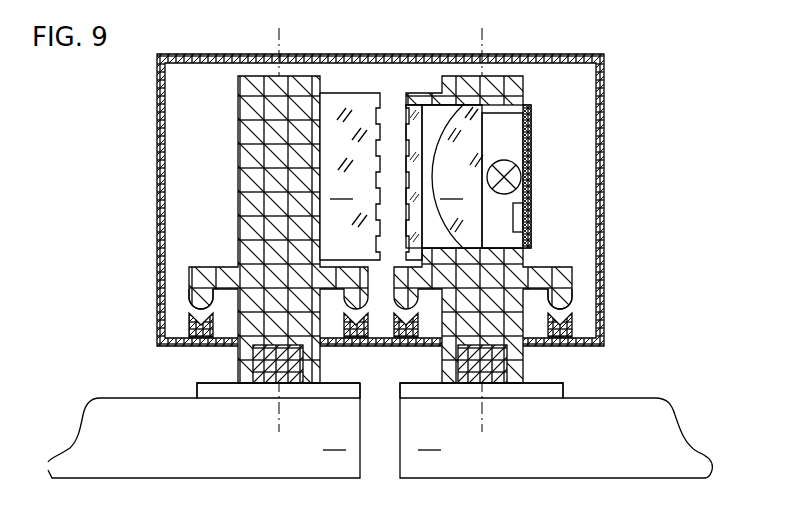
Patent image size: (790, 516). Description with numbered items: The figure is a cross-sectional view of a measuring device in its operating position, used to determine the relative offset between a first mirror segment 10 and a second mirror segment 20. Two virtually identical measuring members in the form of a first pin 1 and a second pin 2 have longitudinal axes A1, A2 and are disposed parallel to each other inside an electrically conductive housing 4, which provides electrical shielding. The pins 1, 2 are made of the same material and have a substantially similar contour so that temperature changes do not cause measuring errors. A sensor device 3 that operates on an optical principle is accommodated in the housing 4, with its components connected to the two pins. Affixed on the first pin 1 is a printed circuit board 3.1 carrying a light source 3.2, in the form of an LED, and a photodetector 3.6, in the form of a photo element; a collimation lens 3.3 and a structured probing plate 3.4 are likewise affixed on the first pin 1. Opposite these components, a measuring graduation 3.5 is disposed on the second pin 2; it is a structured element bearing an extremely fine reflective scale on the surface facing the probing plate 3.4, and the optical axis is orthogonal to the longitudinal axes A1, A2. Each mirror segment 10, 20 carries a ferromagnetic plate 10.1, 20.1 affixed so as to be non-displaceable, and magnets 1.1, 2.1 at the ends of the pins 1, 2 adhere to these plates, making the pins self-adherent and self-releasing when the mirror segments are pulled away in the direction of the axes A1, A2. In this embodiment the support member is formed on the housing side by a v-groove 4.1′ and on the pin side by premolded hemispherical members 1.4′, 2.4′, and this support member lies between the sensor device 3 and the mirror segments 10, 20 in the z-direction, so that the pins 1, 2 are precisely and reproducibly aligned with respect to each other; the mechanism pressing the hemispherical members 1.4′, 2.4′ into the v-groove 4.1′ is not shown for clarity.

The first pin 1 is at (238, 90).
The magnet 1.1 is at (265, 370).
The hemispherical member 1.4′ is at (194, 297).
The second pin 2 is at (514, 87).
The magnet 2.1 is at (493, 368).
The hemispherical member 2.4′ is at (560, 295).
The sensor device 3 is at (458, 140).
The printed circuit board 3.1 is at (532, 118).
The light source 3.2 is at (514, 182).
The collimation lens 3.3 is at (452, 176).
The probing plate 3.4 is at (408, 98).
The measuring graduation 3.5 is at (350, 176).
The photodetector 3.6 is at (518, 224).
The housing 4 is at (158, 105).
The v-groove 4.1′ is at (198, 319).
The first mirror segment 10 is at (204, 430).
The ferromagnetic plate 10.1 is at (346, 392).
The second mirror segment 20 is at (556, 430).
The ferromagnetic plate 20.1 is at (400, 392).
The longitudinal axis A1 is at (279, 36).
The longitudinal axis A2 is at (481, 37).